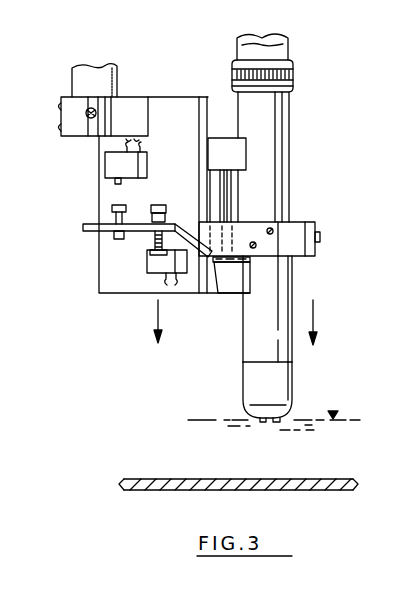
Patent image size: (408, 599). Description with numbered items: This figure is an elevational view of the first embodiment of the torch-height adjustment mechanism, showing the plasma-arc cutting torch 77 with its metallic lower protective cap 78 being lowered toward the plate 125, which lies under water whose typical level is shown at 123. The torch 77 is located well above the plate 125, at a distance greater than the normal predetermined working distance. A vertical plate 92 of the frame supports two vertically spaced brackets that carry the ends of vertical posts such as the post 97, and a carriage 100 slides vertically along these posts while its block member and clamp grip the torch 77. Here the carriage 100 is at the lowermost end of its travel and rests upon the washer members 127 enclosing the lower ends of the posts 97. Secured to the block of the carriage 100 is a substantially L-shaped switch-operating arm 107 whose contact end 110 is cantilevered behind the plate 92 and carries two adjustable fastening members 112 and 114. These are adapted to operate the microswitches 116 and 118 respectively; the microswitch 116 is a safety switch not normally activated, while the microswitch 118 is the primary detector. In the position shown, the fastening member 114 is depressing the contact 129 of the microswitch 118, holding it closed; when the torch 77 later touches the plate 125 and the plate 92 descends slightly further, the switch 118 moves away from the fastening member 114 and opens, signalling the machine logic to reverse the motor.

The vertical plate 92 is at (175, 105).
The vertical post 97 is at (226, 190).
The carriage 100 is at (298, 228).
The washer members 127 is at (222, 293).
The plasma-arc cutting torch 77 is at (293, 279).
The lower protective cap 78 is at (293, 382).
The water level 123 is at (205, 418).
The plate (workpiece) 125 is at (160, 480).
The contact end 110 is at (88, 223).
The switch-operating arm 107 is at (83, 227).
The adjustable fastening member 112 is at (114, 205).
The adjustable fastening member 114 is at (160, 204).
The microswitch 116 is at (107, 165).
The microswitch 118 is at (152, 268).
The contact 129 is at (150, 256).